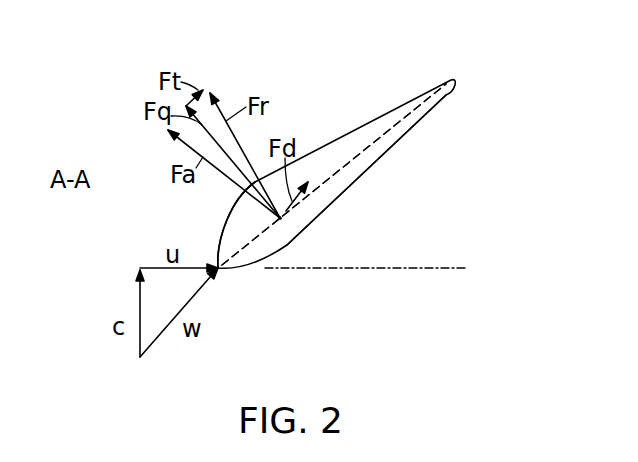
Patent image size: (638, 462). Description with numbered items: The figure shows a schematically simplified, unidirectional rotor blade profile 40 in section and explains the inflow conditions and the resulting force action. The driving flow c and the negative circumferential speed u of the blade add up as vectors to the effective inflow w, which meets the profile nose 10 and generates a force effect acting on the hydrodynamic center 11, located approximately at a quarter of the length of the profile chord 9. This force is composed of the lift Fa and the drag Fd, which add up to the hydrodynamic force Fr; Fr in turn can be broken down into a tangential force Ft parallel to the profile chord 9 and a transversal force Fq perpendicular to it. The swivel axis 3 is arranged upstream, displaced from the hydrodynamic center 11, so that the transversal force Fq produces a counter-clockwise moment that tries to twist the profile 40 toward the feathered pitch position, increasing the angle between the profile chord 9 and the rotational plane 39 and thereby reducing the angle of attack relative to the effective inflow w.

The swivel axis 3 is at (254, 241).
The profile chord 9 is at (393, 125).
The profile nose 10 is at (217, 264).
The hydrodynamic center 11 is at (281, 220).
The rotational plane 39 is at (371, 270).
The profile 40 is at (417, 123).